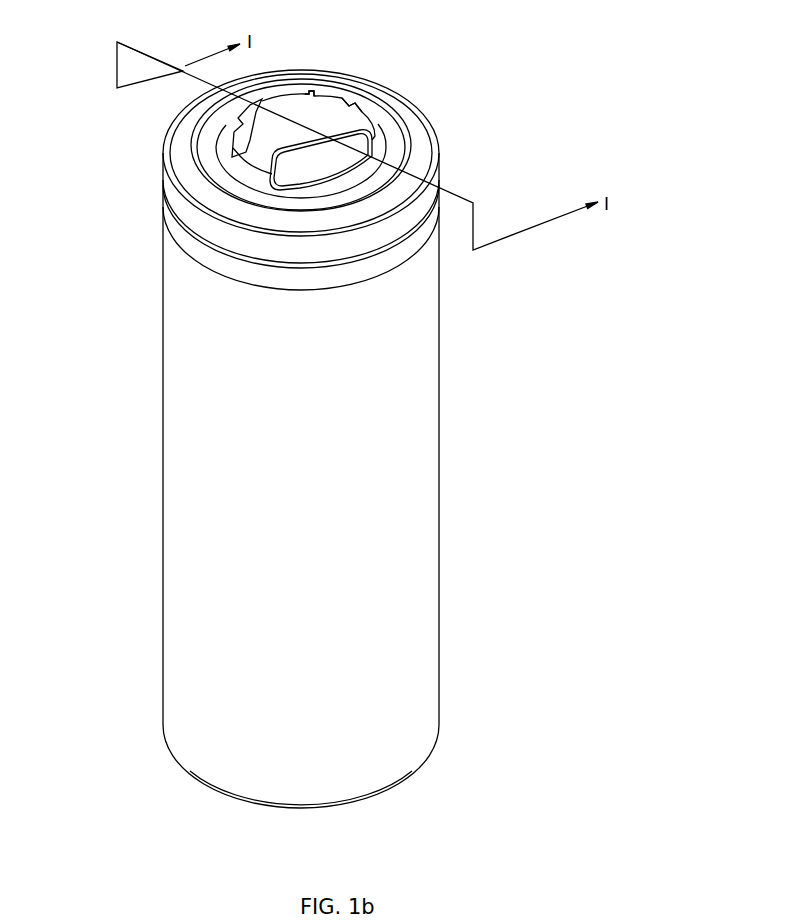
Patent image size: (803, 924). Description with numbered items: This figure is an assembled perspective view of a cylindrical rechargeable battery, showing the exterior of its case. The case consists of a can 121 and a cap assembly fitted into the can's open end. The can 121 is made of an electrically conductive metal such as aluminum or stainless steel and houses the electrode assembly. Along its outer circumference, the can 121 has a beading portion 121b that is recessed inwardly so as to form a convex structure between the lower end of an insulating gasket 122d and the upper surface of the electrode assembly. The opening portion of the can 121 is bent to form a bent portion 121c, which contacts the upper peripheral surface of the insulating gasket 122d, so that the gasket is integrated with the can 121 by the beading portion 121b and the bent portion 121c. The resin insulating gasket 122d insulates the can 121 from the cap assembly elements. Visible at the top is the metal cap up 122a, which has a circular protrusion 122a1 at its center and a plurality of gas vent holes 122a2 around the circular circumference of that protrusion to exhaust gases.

The can 121 is at (403, 463).
The beading portion 121b is at (407, 252).
The bent portion 121c is at (178, 152).
The cap up 122a is at (372, 128).
The circular protrusion 122a1 is at (305, 96).
The gas vent holes 122a2 is at (240, 134).
The insulating gasket 122d is at (350, 93).